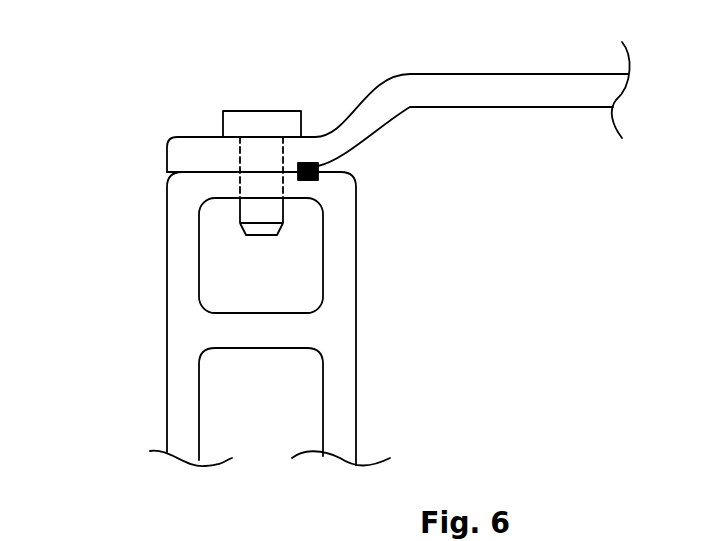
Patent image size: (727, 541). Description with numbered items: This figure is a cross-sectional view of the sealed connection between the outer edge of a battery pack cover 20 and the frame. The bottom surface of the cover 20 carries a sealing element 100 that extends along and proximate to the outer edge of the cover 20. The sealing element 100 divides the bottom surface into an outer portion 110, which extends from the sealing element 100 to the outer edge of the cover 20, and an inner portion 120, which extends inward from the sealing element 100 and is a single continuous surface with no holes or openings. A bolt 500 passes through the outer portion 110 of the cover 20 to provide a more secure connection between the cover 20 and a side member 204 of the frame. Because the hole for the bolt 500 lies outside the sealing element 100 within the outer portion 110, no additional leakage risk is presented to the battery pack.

The cover 20 is at (472, 92).
The inner portion 120 is at (537, 107).
The bolt 500 is at (262, 110).
The outer portion 110 is at (187, 172).
The sealing element 100 is at (308, 180).
The side member 204 is at (356, 387).